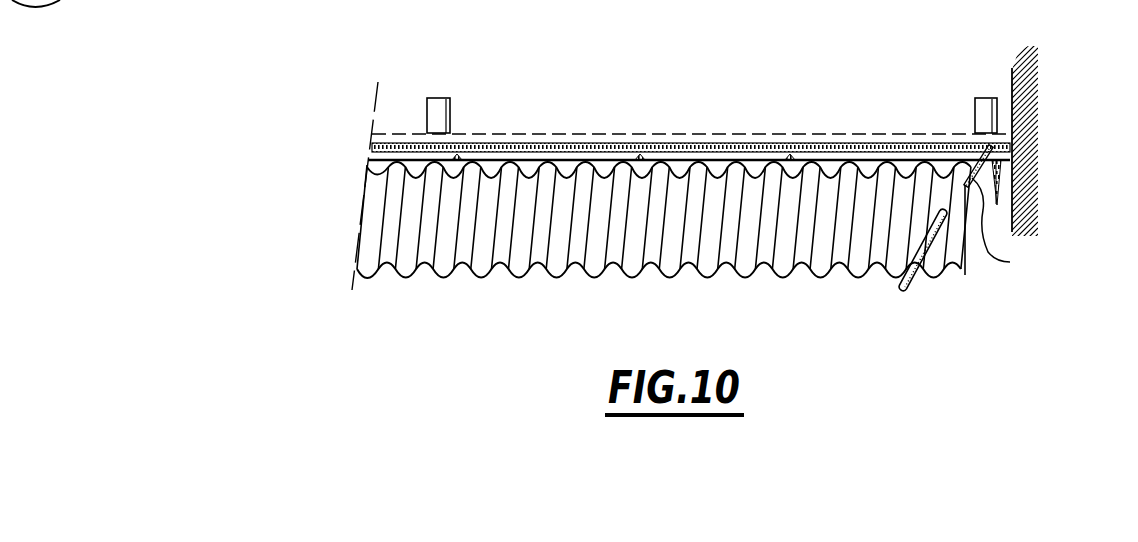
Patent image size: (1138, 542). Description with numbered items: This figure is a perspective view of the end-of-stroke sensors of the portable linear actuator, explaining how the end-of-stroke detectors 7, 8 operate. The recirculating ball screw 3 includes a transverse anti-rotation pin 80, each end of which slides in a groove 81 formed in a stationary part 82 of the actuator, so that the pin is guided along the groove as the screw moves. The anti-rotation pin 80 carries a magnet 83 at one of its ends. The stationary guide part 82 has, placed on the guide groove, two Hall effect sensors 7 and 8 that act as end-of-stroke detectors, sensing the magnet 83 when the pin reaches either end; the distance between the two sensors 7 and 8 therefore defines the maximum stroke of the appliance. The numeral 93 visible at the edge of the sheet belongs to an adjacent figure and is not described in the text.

The recirculating ball screw 3 is at (503, 279).
The Hall effect sensor 7 is at (437, 97).
The Hall effect sensor 8 is at (985, 97).
The anti-rotation pin 80 is at (945, 251).
The groove 81 is at (1012, 160).
The stationary part 82 is at (1024, 106).
The magnet 83 is at (980, 145).
The element of adjacent figure 93 is at (117, 16).